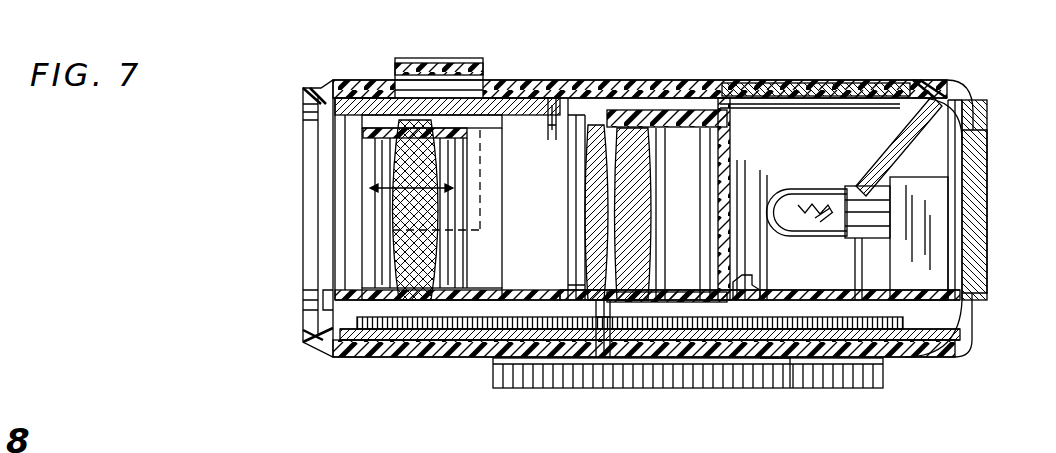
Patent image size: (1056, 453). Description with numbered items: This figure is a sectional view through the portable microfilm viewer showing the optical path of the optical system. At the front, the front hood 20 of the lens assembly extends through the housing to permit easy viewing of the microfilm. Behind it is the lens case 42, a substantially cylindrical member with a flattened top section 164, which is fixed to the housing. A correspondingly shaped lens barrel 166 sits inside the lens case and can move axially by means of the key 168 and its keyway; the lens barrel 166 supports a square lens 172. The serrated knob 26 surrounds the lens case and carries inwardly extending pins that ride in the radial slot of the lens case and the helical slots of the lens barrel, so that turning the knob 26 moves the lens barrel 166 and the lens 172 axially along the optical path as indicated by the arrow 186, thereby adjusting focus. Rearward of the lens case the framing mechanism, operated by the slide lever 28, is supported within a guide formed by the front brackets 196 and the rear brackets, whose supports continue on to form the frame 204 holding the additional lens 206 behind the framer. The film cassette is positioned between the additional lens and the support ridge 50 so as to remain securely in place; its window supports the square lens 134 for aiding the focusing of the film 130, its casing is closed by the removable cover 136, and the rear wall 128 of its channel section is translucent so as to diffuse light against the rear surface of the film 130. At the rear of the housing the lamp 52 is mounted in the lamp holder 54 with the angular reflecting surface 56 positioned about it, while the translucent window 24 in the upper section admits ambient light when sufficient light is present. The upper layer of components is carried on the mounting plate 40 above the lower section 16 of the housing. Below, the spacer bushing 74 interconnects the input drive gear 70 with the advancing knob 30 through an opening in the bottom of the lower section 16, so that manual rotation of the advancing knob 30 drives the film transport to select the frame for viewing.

The front hood 20 is at (307, 87).
The lens case 42 is at (344, 102).
The translucent window 24 is at (865, 80).
The serrated knob 26 is at (483, 60).
The front brackets 196 is at (553, 110).
The lens barrel 166 is at (380, 313).
The key 168 is at (484, 130).
The square lens 172 is at (424, 272).
The arrow 186 is at (455, 188).
The slide lever 28 is at (573, 80).
The frame 204 is at (627, 120).
The film 130 is at (646, 257).
The square lens 134 is at (665, 97).
The removable cover 136 is at (723, 130).
The rear wall 128 is at (745, 160).
The lamp 52 is at (823, 192).
The lamp holder 54 is at (943, 260).
The support ridge 50 is at (753, 283).
The angular reflecting surface 56 is at (975, 136).
The mounting plate 40 is at (936, 307).
The lower section 16 is at (918, 356).
The flattened top section 164 is at (488, 307).
The input drive gear 70 is at (842, 320).
The spacer bushing 74 is at (690, 354).
The advancing knob 30 is at (770, 374).
The additional lens 206 is at (602, 300).